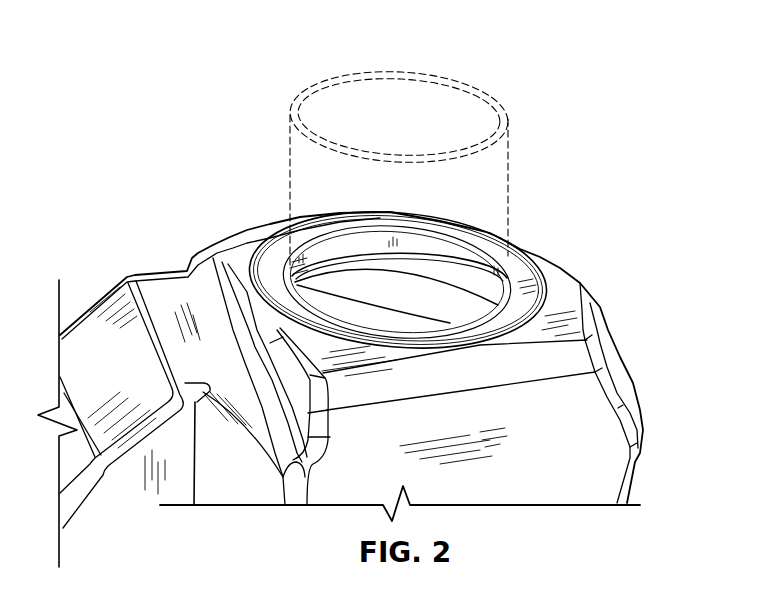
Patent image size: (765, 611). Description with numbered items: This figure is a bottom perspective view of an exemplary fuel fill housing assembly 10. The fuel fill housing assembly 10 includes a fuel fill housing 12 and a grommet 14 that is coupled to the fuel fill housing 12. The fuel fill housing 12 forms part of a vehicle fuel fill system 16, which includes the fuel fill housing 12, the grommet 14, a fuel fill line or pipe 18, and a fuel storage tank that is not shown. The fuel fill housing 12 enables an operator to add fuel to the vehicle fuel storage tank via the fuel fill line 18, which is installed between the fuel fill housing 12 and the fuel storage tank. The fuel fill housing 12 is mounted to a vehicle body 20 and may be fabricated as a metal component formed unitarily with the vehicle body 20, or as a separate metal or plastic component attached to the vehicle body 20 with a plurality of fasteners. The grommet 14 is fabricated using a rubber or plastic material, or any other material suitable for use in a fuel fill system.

The fuel fill housing assembly 10 is at (186, 60).
The fuel fill housing 12 is at (558, 308).
The grommet 14 is at (523, 265).
The vehicle fuel fill system 16 is at (213, 231).
The fuel fill line 18 is at (513, 147).
The vehicle body 20 is at (112, 330).